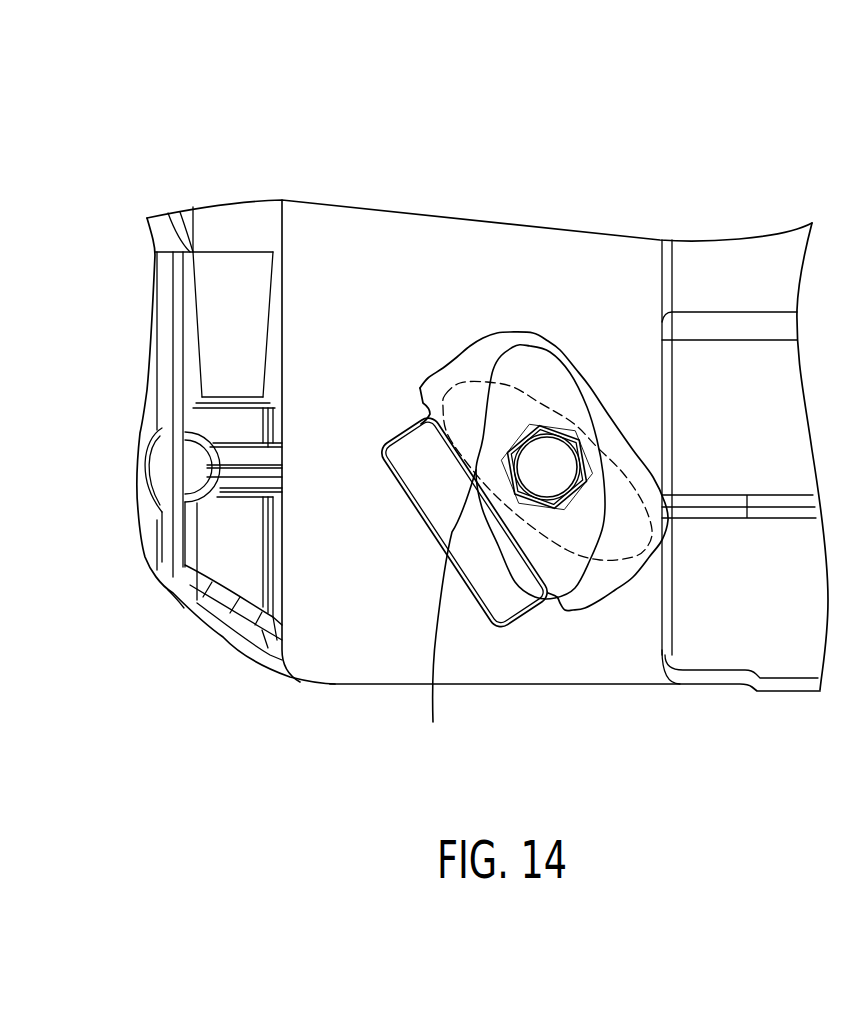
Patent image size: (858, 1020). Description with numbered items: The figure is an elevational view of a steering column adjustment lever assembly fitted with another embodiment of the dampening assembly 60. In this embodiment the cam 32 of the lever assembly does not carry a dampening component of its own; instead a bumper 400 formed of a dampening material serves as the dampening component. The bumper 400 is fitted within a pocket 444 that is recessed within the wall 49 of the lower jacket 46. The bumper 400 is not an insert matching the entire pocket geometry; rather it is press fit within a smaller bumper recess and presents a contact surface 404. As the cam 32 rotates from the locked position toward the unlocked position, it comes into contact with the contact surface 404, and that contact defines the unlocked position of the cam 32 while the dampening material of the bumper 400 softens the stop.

The lower jacket 46 is at (607, 250).
The wall 49 is at (375, 597).
The dampening assembly 60 is at (458, 368).
The pocket 444 is at (616, 575).
The cam 32 is at (560, 553).
The bumper 400 is at (448, 535).
The contact surface 404 is at (538, 565).